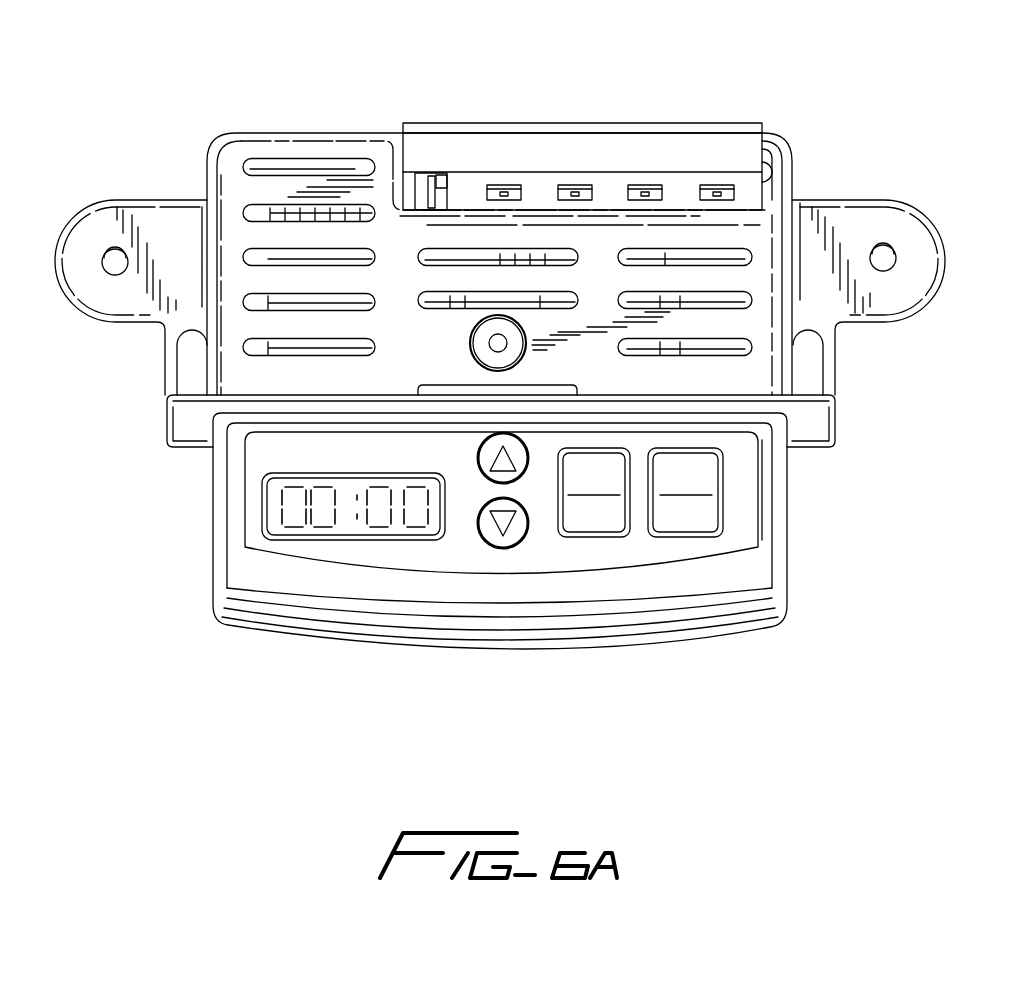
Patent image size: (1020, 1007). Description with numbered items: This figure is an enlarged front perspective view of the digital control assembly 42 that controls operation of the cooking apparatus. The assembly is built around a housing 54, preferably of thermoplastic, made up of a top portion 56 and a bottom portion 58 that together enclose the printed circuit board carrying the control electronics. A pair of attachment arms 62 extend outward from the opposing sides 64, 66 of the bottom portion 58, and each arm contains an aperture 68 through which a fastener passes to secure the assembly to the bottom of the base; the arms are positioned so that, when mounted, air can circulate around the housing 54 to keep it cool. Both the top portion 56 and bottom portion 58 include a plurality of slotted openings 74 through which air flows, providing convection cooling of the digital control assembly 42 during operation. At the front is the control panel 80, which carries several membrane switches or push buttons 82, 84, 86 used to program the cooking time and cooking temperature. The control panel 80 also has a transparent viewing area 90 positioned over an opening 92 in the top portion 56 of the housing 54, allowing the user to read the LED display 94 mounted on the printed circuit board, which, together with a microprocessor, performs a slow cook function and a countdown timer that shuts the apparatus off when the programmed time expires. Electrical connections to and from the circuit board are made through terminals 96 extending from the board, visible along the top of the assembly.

The digital control assembly 42 is at (617, 72).
The housing 54 is at (778, 493).
The top portion 56 is at (276, 147).
The bottom portion 58 is at (187, 430).
The attachment arms 62 is at (870, 163).
The side 64 is at (207, 178).
The side 66 is at (790, 167).
The apertures 68 is at (118, 265).
The slotted openings 74 is at (305, 165).
The control panel 80 is at (437, 558).
The push button 82 is at (683, 527).
The push button 84 is at (592, 527).
The push button 86 is at (480, 457).
The transparent viewing area 90 is at (250, 519).
The opening 92 is at (271, 522).
The LED display 94 is at (285, 517).
The terminals 96 is at (433, 188).